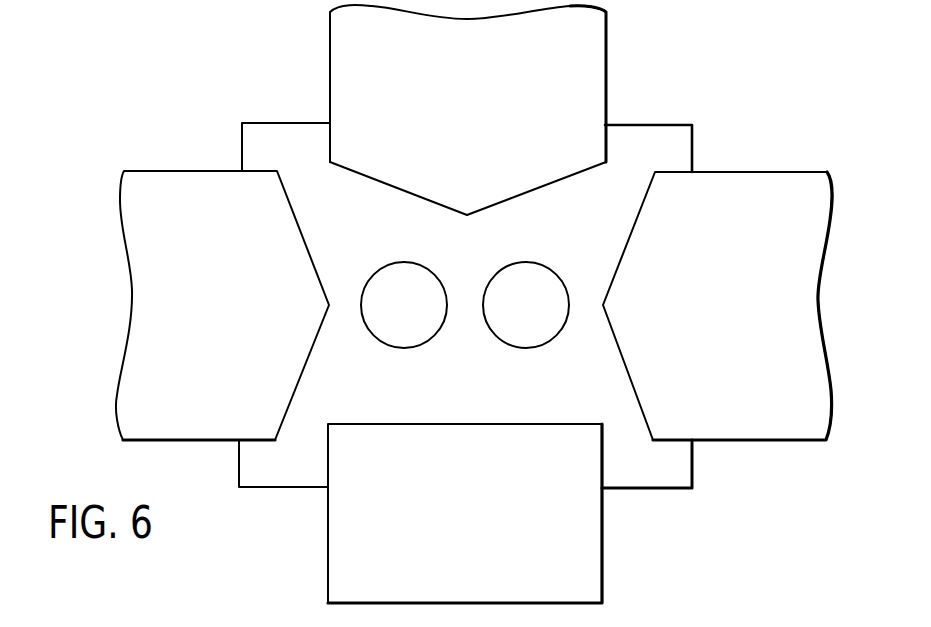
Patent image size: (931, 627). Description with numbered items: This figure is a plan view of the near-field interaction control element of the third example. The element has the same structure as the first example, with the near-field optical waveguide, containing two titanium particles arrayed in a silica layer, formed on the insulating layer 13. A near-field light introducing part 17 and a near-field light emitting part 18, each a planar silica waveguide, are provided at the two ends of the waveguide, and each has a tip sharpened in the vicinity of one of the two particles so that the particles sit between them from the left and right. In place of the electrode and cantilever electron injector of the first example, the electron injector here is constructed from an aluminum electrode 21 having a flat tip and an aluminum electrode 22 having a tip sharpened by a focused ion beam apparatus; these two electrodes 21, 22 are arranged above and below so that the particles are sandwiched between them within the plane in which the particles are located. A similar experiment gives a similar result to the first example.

The insulating layer 13 is at (648, 131).
The near-field light introducing part 17 is at (177, 178).
The near-field light emitting part 18 is at (773, 180).
The aluminum electrode 21 is at (589, 553).
The aluminum electrode 22 is at (596, 38).